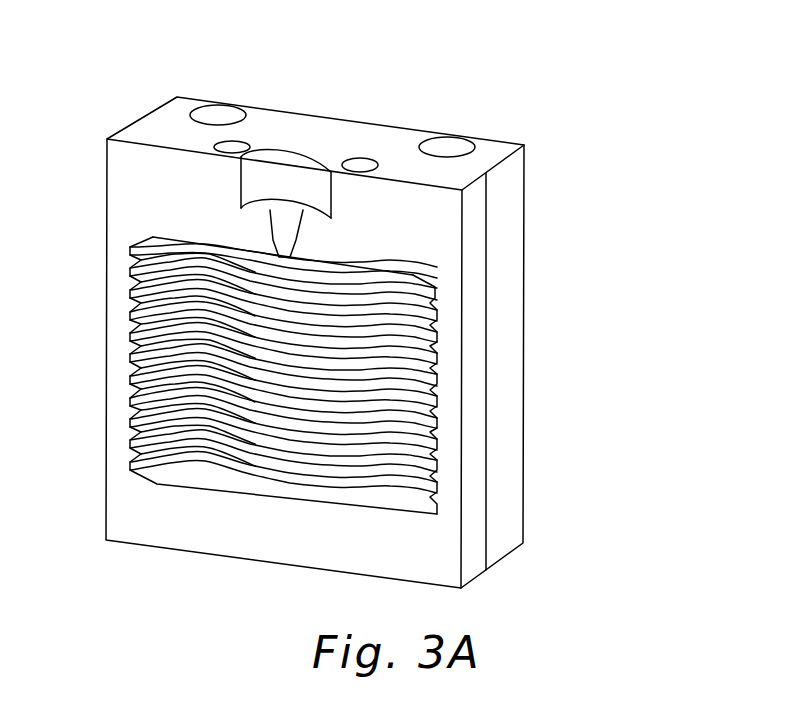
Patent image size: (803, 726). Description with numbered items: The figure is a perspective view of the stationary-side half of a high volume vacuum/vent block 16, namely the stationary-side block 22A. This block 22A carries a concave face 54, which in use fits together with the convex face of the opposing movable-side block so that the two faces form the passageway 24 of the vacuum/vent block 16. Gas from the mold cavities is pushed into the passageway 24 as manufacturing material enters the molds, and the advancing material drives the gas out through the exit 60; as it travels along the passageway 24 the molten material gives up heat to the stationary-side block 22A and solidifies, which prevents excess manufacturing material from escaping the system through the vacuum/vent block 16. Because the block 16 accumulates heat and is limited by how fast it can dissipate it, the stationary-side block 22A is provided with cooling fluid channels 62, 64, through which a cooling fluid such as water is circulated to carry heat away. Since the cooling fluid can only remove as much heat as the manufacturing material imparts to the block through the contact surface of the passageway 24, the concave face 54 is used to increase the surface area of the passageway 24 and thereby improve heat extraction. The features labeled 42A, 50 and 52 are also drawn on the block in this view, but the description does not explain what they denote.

The vacuum/vent block 16 is at (118, 107).
The stationary-side block 22A is at (500, 145).
The passageway 24 is at (218, 473).
The inlet bore 42A is at (308, 168).
The passage 50 is at (233, 157).
The port 52 is at (363, 162).
The concave face 54 is at (413, 352).
The exit 60 is at (285, 230).
The cooling fluid channel 62 is at (447, 150).
The cooling fluid channel 64 is at (212, 115).